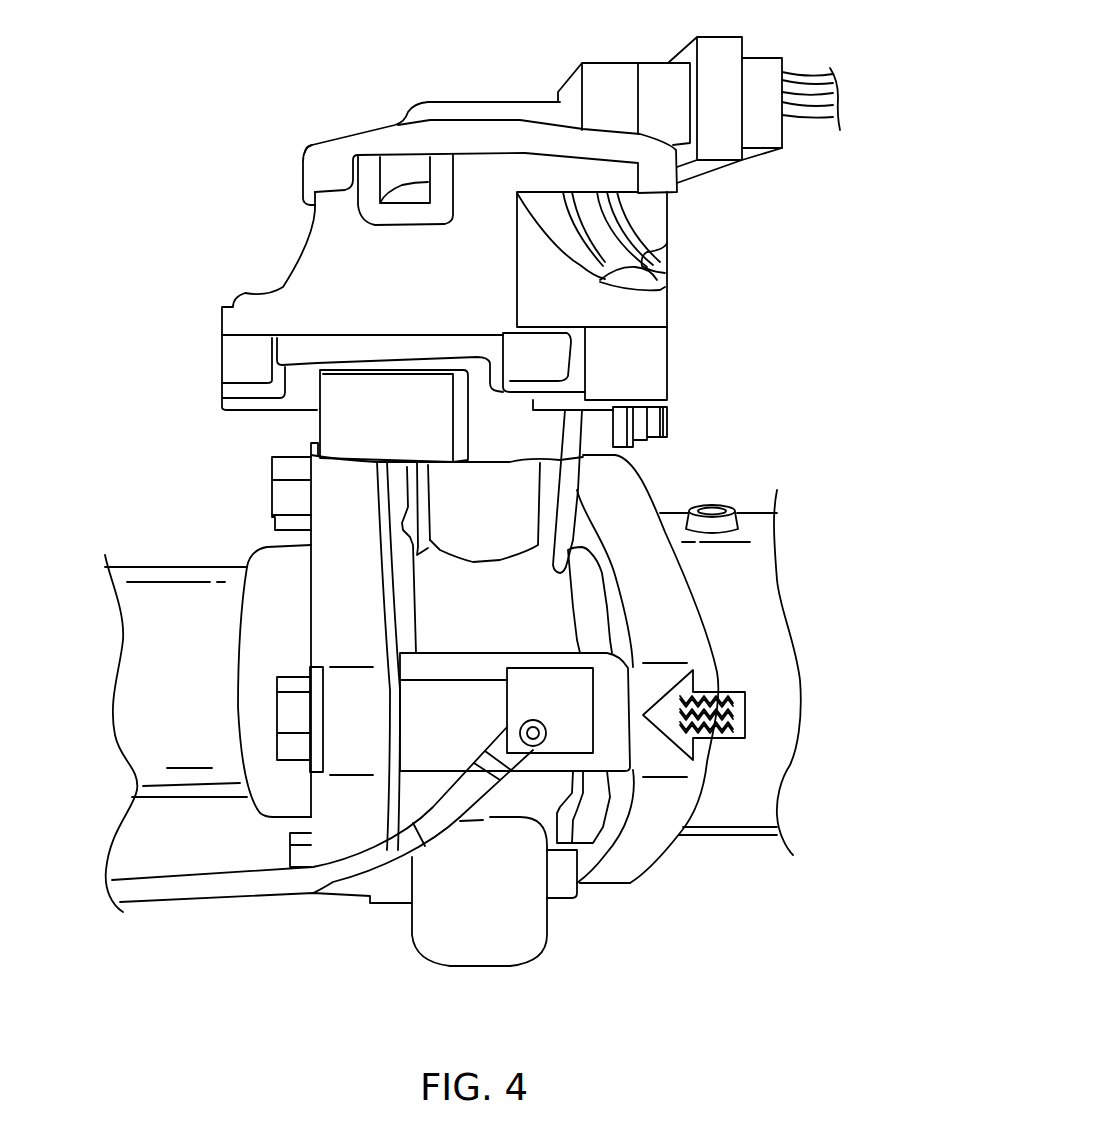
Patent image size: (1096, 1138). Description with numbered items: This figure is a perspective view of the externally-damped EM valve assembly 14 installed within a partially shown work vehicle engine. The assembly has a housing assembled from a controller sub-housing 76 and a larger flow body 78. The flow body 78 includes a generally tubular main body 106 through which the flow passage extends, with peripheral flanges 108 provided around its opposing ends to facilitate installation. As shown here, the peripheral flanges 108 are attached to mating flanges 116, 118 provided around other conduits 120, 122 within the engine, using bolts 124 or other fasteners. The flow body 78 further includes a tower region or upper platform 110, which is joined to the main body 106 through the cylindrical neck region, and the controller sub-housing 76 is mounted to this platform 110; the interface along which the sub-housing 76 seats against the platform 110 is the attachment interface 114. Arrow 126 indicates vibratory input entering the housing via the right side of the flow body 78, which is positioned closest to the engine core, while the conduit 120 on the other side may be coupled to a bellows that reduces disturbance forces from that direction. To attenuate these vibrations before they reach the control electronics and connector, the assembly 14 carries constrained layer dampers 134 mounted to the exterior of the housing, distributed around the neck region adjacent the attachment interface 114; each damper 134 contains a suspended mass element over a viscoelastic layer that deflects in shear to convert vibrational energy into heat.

The externally-damped EM valve assembly 14 is at (228, 284).
The controller sub-housing 76 is at (310, 257).
The flow body 78 is at (590, 593).
The main body 106 is at (549, 619).
The peripheral flanges 108 is at (400, 630).
The upper platform 110 is at (655, 362).
The attachment interface 114 is at (410, 335).
The mating flange 116 is at (327, 633).
The mating flange 118 is at (683, 622).
The conduit 120 is at (182, 857).
The conduit 122 is at (728, 822).
The bolts 124 is at (283, 493).
The arrow 126 is at (714, 740).
The constrained layer damper 134 is at (333, 423).